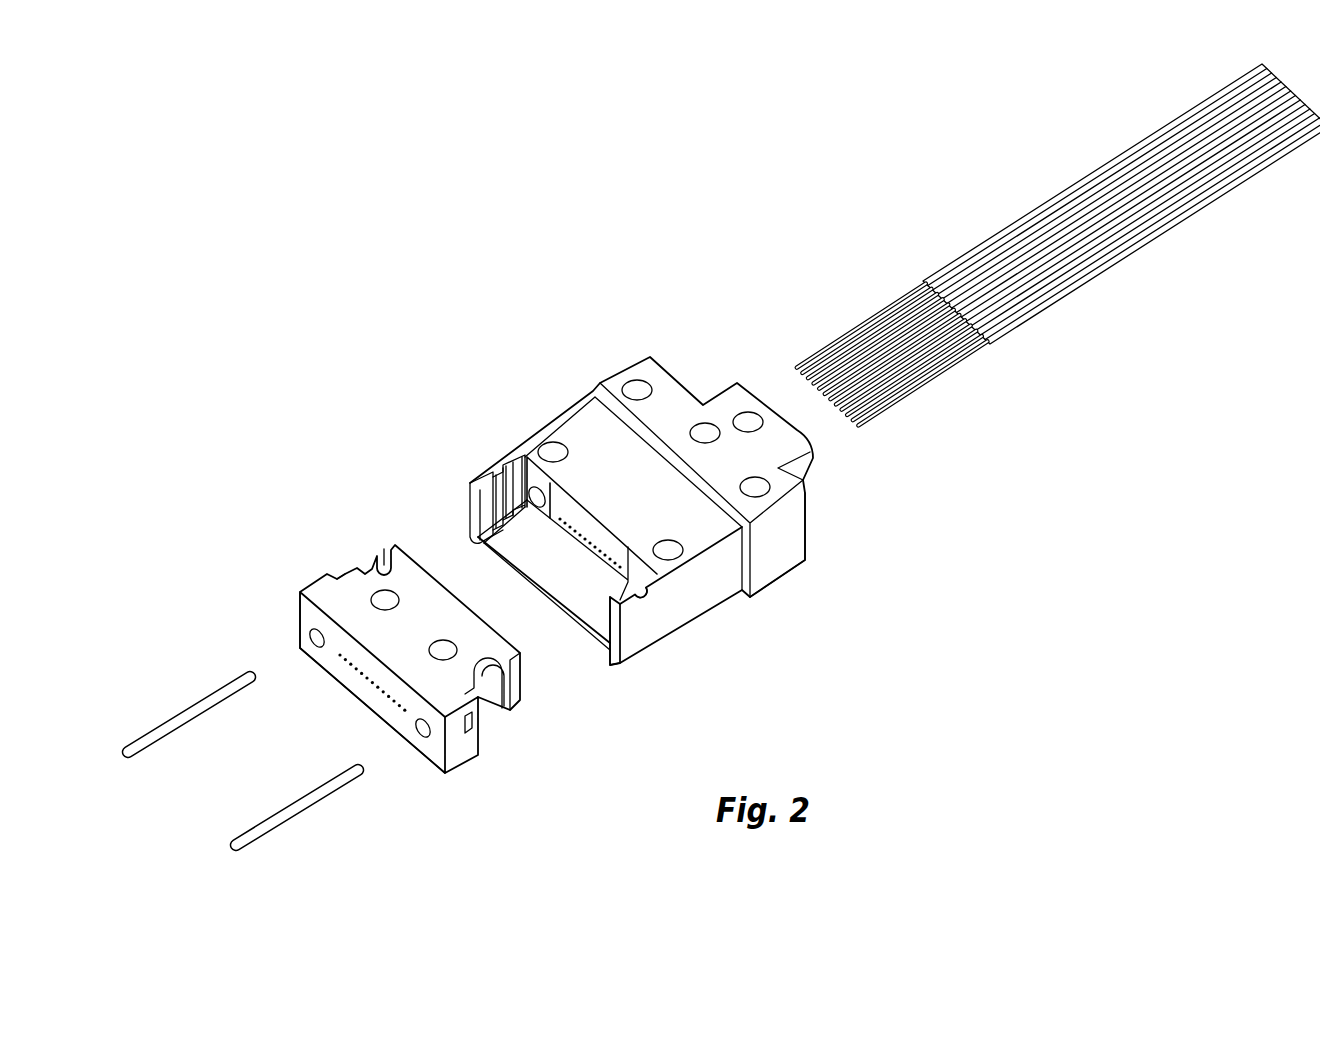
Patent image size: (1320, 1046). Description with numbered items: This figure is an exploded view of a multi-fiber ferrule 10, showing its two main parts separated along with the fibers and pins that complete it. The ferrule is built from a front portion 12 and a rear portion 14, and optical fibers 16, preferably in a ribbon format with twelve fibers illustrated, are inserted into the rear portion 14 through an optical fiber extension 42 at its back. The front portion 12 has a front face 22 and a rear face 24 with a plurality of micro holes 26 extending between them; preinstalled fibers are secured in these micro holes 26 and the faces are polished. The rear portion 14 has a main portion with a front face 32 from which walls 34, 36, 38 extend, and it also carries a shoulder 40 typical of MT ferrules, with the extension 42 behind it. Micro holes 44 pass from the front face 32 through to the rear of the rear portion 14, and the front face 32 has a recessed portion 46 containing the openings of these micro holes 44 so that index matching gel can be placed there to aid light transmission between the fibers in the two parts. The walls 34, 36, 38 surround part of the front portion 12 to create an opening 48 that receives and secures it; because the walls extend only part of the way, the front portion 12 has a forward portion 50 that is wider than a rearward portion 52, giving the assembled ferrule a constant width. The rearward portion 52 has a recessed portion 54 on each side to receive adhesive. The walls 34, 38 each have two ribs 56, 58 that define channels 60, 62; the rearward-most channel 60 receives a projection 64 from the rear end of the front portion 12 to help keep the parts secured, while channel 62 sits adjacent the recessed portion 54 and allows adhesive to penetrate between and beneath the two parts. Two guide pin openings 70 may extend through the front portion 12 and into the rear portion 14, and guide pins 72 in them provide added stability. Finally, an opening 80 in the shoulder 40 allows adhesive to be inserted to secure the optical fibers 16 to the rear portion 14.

The multi-fiber ferrule 10 is at (706, 236).
The front portion 12 is at (460, 767).
The rear portion 14 is at (723, 603).
The optical fibers 16 is at (1178, 223).
The front face 22 is at (437, 773).
The rear face 24 is at (523, 682).
The micro holes 26 is at (377, 688).
The front face 32 is at (543, 487).
The wall 34 is at (473, 507).
The wall 36 is at (585, 637).
The wall 38 is at (613, 650).
The shoulder 40 is at (798, 546).
The optical fiber extension 42 is at (813, 466).
The micro holes 44 is at (587, 543).
The recessed portion 46 is at (617, 548).
The opening 48 is at (550, 572).
The forward portion 50 is at (300, 578).
The rearward portion 52 is at (356, 568).
The recessed portion 54 is at (487, 665).
The rib 56 is at (478, 482).
The rib 58 is at (502, 467).
The channel 60 is at (525, 500).
The channel 62 is at (510, 502).
The projection 64 is at (382, 548).
The guide pin openings 70 is at (532, 488).
The guide pins 72 is at (240, 828).
The opening 80 is at (703, 426).